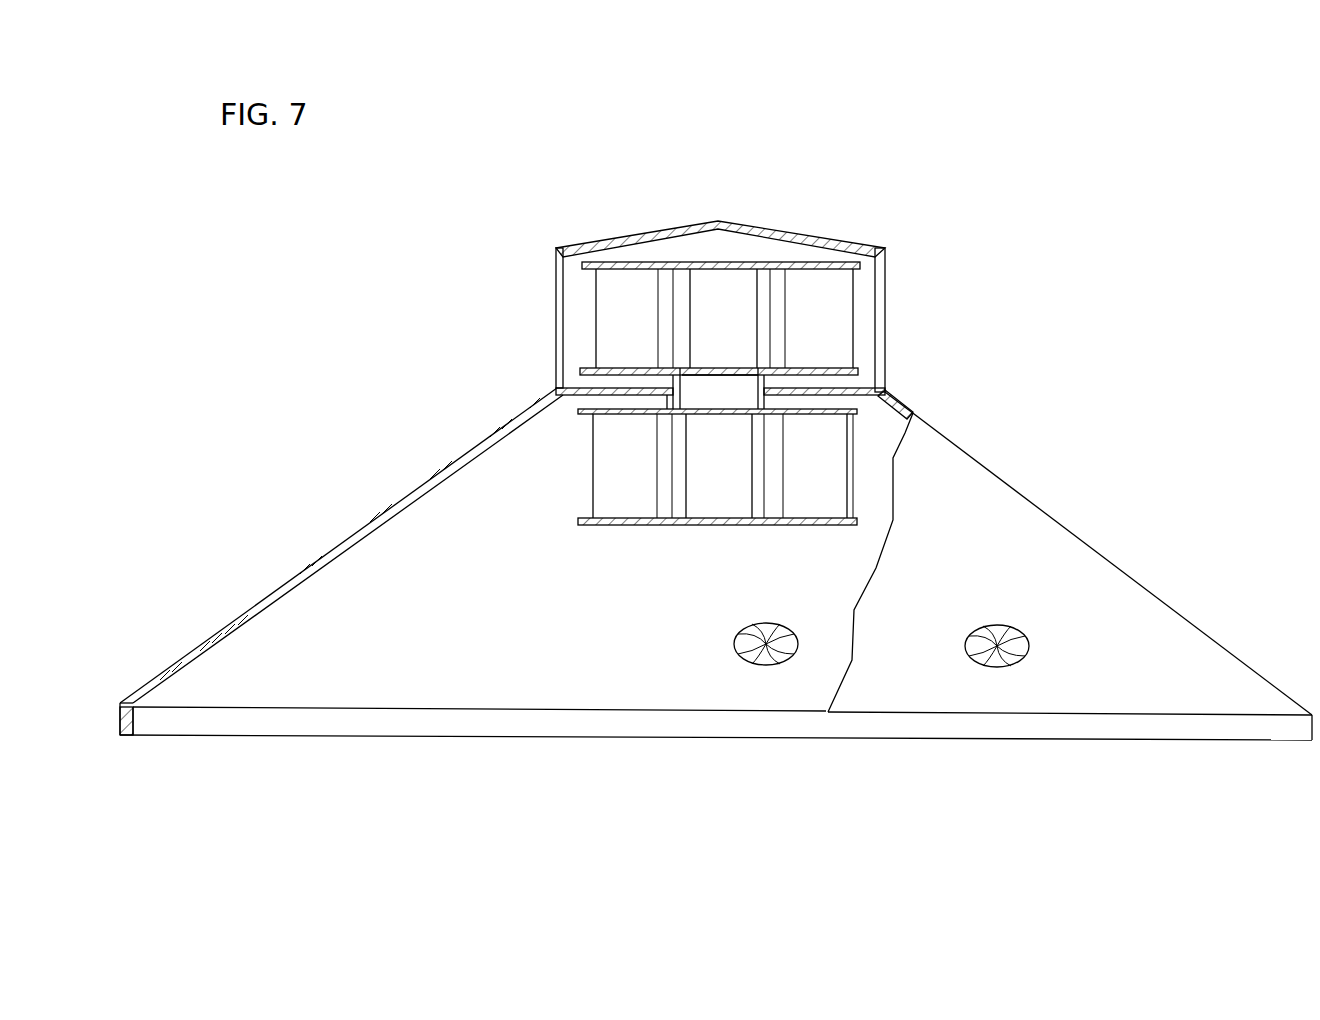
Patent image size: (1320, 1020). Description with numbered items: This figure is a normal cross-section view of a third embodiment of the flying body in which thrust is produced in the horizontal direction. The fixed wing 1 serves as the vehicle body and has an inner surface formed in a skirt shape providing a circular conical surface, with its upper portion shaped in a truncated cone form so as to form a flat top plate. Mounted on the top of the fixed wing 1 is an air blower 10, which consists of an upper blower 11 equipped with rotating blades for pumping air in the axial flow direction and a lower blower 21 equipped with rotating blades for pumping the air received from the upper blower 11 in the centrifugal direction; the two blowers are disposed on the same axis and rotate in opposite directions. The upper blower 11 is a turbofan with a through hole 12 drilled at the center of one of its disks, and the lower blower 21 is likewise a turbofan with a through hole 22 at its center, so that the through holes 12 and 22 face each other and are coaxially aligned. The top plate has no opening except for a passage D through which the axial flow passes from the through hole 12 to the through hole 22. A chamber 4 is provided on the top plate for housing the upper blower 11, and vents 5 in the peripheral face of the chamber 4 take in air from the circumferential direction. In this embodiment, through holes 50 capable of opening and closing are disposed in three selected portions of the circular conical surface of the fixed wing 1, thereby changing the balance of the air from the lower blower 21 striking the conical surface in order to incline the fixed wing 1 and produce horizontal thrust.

The fixed wing 1 is at (1123, 567).
The chamber 4 is at (802, 235).
The vents 5 is at (555, 300).
The air blower 10 is at (917, 361).
The upper blower 11 is at (590, 336).
The through hole 12 is at (727, 368).
The lower blower 21 is at (580, 457).
The through hole 22 is at (705, 415).
The passage D is at (732, 400).
The through holes 50 is at (205, 638).